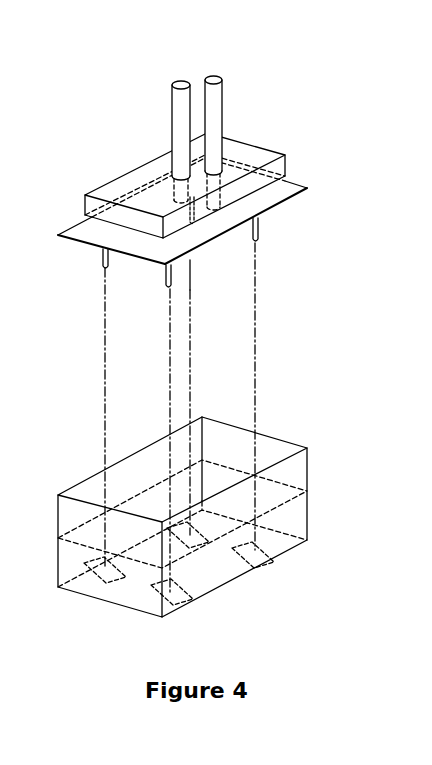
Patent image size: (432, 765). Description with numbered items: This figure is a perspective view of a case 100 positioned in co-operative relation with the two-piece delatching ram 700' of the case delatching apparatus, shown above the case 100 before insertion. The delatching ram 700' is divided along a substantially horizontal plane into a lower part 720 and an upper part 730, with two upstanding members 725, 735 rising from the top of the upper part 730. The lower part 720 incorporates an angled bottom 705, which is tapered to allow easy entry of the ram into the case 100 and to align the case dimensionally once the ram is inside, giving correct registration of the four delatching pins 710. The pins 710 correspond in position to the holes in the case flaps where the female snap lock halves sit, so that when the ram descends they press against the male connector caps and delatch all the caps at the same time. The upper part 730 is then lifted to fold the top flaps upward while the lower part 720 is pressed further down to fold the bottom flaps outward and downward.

The two-piece delatching ram 700' is at (222, 176).
The angled bottom 705 is at (276, 228).
The pins 710 is at (105, 268).
The lower part 720 is at (80, 231).
The terminal pin 725 is at (215, 102).
The upper part 730 is at (136, 171).
The terminal pin 735 is at (172, 100).
The case 100 is at (327, 482).